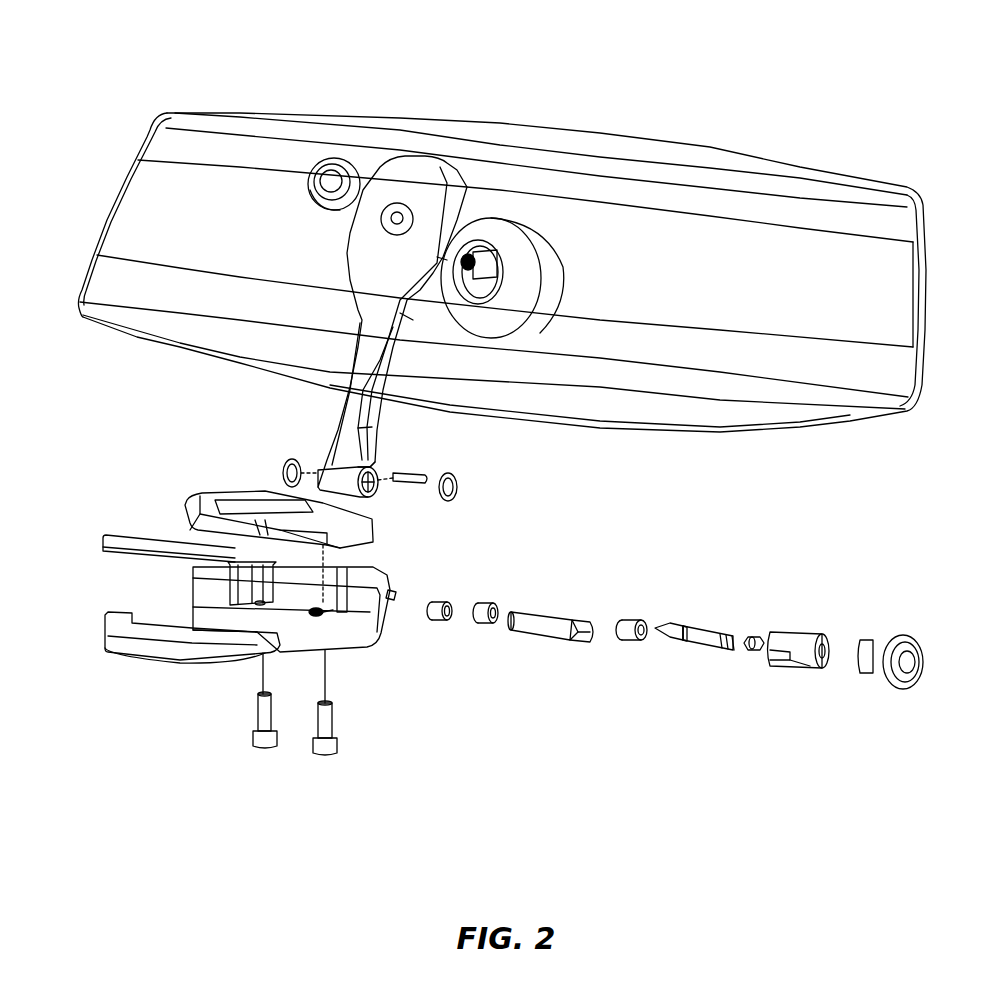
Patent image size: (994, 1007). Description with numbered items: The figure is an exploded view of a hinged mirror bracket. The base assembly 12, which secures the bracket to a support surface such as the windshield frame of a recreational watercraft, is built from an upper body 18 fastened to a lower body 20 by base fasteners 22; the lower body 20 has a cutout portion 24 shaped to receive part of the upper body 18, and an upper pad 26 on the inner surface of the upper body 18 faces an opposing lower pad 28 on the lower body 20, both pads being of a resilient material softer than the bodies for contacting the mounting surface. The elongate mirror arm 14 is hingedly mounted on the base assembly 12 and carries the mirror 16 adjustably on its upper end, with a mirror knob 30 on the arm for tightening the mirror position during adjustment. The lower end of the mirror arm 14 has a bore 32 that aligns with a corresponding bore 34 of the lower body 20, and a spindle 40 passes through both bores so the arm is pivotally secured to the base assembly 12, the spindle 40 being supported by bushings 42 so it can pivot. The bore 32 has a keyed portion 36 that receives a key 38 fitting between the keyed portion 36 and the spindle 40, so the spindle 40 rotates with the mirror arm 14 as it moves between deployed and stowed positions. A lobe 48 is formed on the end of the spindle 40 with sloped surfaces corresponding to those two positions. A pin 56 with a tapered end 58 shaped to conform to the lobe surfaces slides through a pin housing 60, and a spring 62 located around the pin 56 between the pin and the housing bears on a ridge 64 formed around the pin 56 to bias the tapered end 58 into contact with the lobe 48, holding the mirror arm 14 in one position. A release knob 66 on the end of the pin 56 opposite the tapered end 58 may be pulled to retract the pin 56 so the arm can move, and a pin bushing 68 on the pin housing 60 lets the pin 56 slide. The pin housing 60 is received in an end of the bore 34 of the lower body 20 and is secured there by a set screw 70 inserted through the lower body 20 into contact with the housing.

The base assembly 12 is at (394, 657).
The mirror arm 14 is at (338, 402).
The mirror 16 is at (708, 143).
The upper body 18 is at (198, 506).
The lower body 20 is at (380, 568).
The base fasteners 22 is at (258, 748).
The cutout portion 24 is at (278, 582).
The upper pad 26 is at (118, 538).
The lower pad 28 is at (105, 648).
The mirror knob 30 is at (336, 156).
The bore 32 is at (380, 490).
The bore of the lower body 34 is at (392, 597).
The keyed portion 36 is at (378, 460).
The key 38 is at (444, 474).
The spindle 40 is at (548, 612).
The bushings 42 is at (482, 630).
The lobe 48 is at (577, 640).
The pin 56 is at (707, 630).
The tapered end 58 is at (657, 637).
The pin housing 60 is at (803, 632).
The spring 62 is at (754, 637).
The ridge 64 is at (684, 627).
The release knob 66 is at (897, 628).
The pin bushing 68 is at (636, 620).
The set screw 70 is at (308, 612).